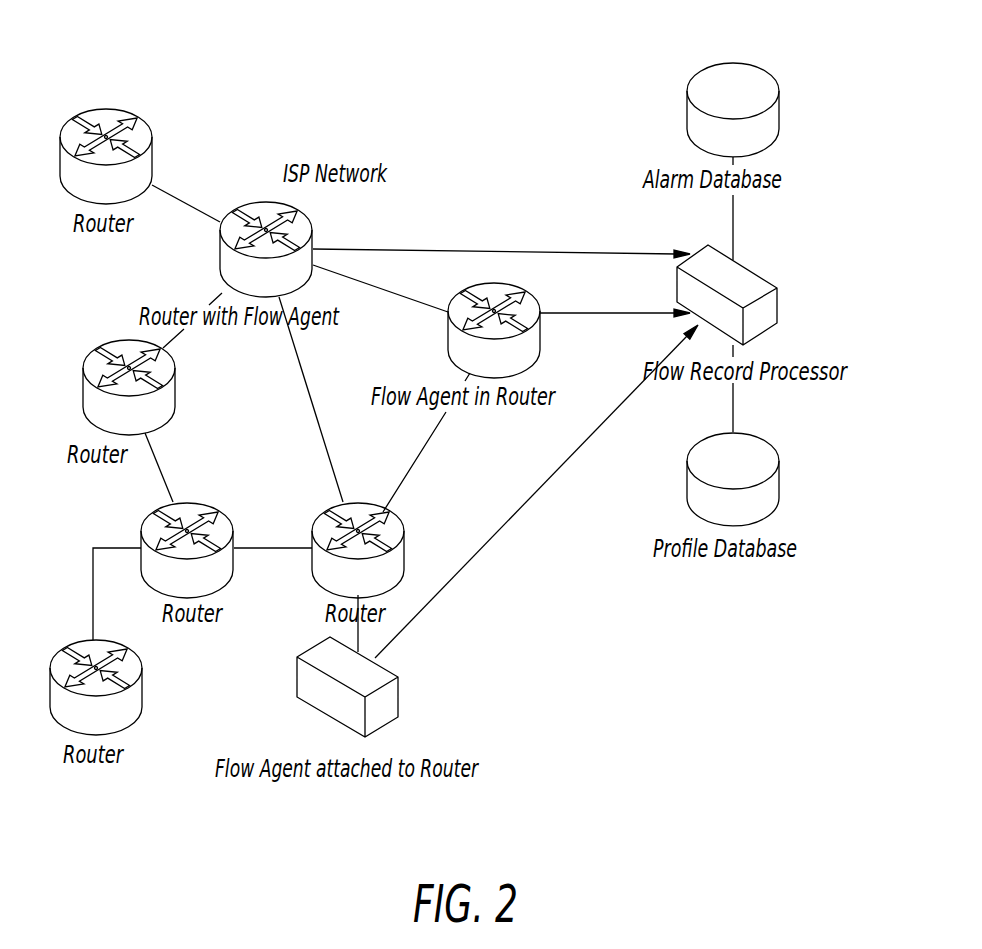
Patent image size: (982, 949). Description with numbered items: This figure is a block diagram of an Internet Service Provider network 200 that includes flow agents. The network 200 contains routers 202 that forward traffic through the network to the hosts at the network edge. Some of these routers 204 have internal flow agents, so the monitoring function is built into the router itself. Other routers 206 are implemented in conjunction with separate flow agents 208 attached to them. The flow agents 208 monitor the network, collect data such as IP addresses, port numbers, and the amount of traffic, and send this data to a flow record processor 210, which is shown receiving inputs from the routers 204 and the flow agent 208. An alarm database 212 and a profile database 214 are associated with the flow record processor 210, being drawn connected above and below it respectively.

The Internet Service Provider network 200 is at (378, 113).
The router 202 is at (153, 143).
The router with internal flow agent 204 is at (313, 240).
The router 206 is at (405, 540).
The flow agent 208 is at (398, 690).
The flow record processor 210 is at (758, 275).
The alarm database 212 is at (777, 108).
The profile database 214 is at (780, 478).